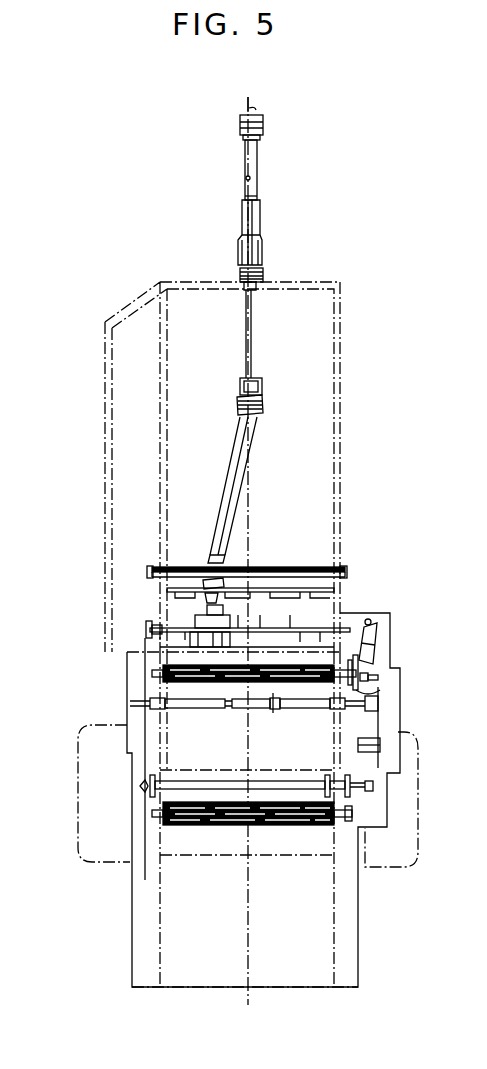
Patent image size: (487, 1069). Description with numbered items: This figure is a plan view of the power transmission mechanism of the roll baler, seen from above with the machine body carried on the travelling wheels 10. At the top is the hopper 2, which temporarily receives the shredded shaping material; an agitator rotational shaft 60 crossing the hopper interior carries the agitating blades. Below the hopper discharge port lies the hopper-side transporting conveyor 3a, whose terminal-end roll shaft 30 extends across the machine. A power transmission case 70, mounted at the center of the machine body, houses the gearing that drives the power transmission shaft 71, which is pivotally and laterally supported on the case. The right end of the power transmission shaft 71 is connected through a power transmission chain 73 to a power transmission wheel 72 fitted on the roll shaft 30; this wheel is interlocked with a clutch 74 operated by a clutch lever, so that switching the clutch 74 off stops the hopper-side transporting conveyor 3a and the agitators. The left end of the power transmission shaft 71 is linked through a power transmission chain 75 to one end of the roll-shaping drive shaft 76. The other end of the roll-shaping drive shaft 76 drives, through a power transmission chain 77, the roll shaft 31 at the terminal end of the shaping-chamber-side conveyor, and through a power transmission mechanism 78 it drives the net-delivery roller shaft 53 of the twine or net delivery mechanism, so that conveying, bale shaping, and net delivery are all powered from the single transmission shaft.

The hopper 2 is at (341, 445).
The hopper-side transporting conveyor 3a is at (312, 568).
The travelling wheels 10 is at (78, 805).
The roll shaft 30 is at (165, 675).
The roll shaft 31 is at (336, 825).
The net-delivery roller shaft 53 is at (198, 708).
The rotational shaft 60 is at (323, 623).
The power transmission case 70 is at (205, 641).
The power transmission shaft 71 is at (148, 626).
The power transmission wheel 72 is at (378, 689).
The power transmission chain 73 is at (373, 640).
The clutch 74 is at (362, 666).
The power transmission chain 75 is at (143, 731).
The roll-shaping drive shaft 76 is at (185, 787).
The power transmission chain 77 is at (352, 818).
The power transmission mechanism 78 is at (380, 742).